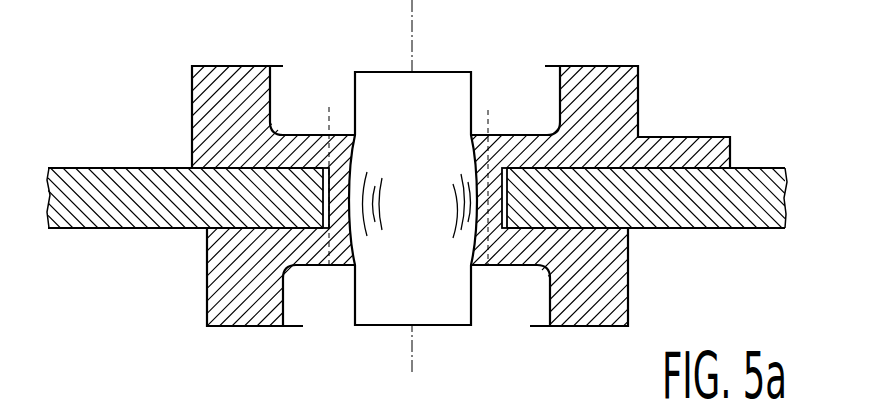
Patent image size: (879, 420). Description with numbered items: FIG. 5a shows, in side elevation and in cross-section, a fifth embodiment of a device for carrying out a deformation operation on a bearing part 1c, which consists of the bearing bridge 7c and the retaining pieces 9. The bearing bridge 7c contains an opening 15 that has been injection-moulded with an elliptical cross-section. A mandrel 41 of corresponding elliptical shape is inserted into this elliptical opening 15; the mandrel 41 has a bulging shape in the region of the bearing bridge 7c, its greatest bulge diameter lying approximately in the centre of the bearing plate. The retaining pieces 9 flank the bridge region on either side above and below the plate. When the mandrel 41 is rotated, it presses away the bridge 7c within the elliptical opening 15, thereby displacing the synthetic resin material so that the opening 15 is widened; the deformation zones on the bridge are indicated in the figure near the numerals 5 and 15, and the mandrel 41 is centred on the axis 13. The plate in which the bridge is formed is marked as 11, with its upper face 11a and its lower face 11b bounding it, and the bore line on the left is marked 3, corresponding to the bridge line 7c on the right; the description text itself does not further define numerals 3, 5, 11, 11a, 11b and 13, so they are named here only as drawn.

The bearing part 1c is at (666, 97).
The bore 3 is at (328, 174).
The deformation zone 5 is at (328, 206).
The bearing bridge 7c is at (499, 175).
The retaining pieces 9 is at (197, 118).
The plate 11 is at (756, 171).
The upper plate surface 11a is at (78, 166).
The lower plate surface 11b is at (83, 232).
The center axis 13 is at (412, 37).
The opening 15 is at (473, 208).
The mandrel 41 is at (476, 78).